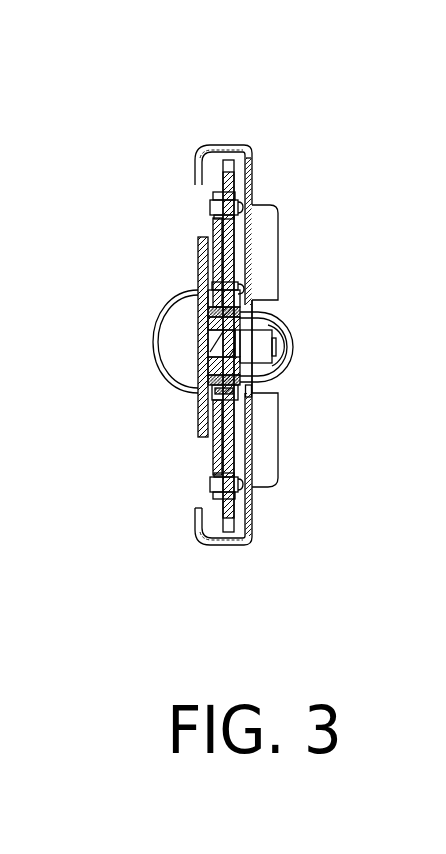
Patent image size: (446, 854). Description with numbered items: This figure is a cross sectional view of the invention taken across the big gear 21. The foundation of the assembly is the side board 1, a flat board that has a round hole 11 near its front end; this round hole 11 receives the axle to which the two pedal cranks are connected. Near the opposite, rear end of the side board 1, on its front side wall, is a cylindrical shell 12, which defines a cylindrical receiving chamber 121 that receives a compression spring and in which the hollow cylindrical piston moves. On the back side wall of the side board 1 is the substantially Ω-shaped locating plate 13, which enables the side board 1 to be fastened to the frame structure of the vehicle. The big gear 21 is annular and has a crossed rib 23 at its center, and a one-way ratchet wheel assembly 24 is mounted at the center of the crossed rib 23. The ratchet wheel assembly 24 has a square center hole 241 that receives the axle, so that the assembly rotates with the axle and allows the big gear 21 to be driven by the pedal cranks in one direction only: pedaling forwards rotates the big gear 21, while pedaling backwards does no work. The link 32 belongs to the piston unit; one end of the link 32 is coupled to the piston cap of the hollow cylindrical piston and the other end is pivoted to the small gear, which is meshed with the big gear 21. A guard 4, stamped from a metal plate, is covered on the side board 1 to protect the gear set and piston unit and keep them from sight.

The side board 1 is at (197, 240).
The round hole 11 is at (202, 342).
The cylindrical shell 12 is at (293, 345).
The cylindrical receiving chamber 121 is at (262, 372).
The Ω-shaped locating plate 13 is at (166, 372).
The big gear 21 is at (253, 520).
The crossed rib 23 is at (212, 443).
The one-way ratchet wheel assembly 24 is at (212, 328).
The square center hole 241 is at (248, 380).
The link 32 is at (258, 352).
The guard 4 is at (218, 146).